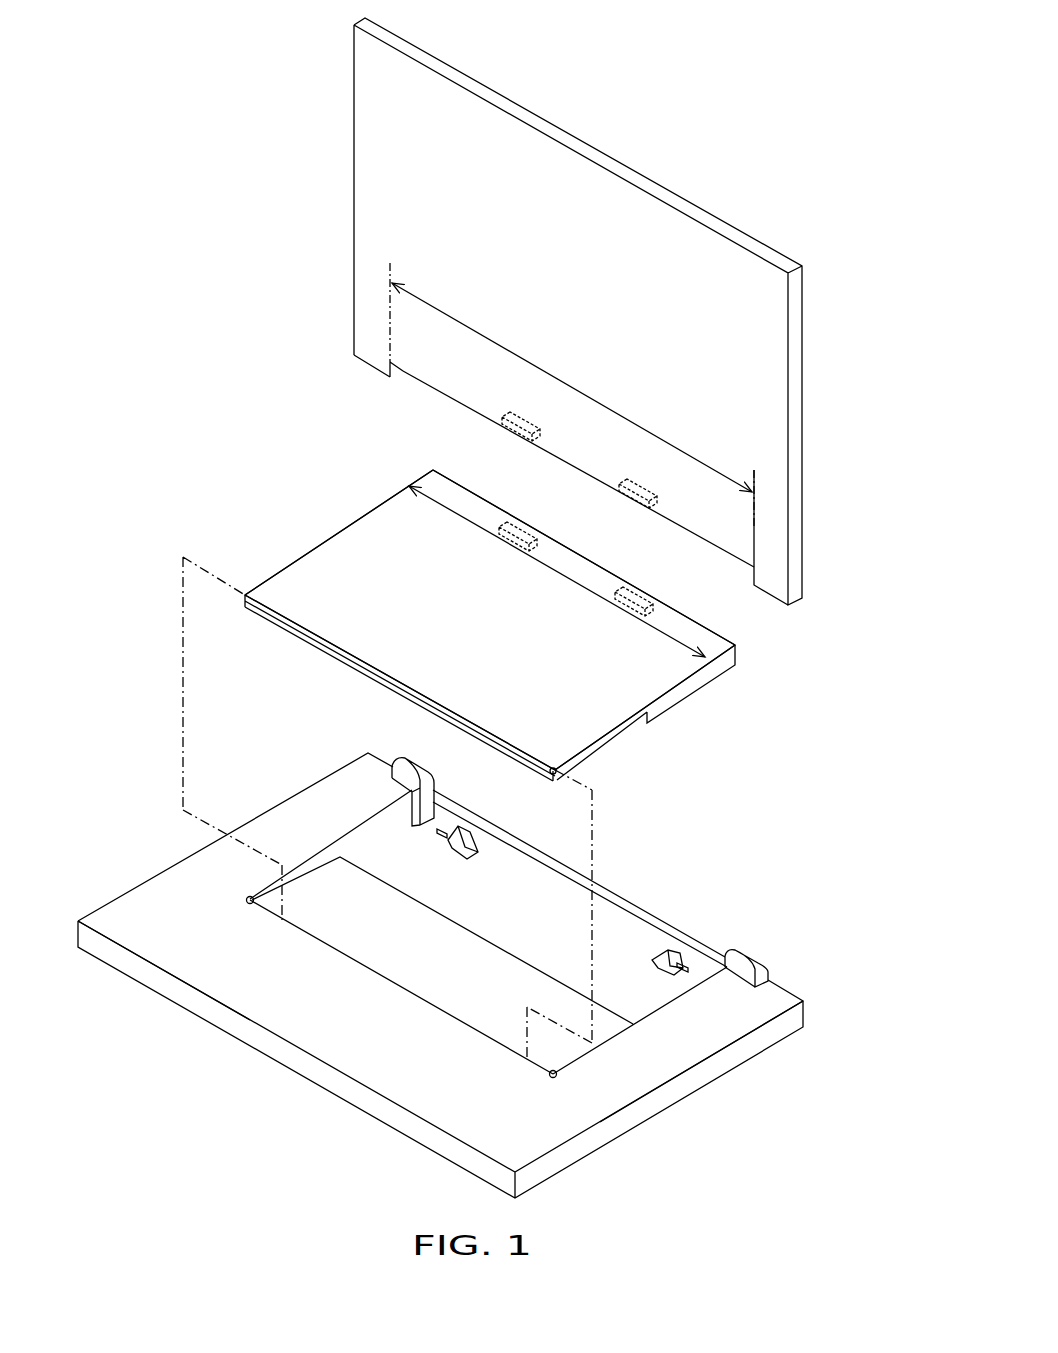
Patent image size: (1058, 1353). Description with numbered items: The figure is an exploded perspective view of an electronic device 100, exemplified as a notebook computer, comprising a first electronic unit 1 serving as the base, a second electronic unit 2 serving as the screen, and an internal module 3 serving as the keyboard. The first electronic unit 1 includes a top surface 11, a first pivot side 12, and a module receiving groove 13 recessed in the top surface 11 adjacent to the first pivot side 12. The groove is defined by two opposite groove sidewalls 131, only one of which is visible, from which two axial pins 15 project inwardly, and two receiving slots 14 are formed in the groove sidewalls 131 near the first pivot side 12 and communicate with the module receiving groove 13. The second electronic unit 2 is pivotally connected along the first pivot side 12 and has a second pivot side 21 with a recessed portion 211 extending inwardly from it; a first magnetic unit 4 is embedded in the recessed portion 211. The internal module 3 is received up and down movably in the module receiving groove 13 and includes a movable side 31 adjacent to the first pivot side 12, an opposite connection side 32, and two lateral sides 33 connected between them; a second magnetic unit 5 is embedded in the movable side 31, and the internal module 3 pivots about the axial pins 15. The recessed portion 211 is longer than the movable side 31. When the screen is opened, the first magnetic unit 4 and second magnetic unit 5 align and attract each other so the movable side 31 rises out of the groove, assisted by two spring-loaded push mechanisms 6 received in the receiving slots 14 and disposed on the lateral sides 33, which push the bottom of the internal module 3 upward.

The electronic device 100 is at (200, 209).
The first electronic unit 1 is at (237, 1037).
The top surface 11 is at (158, 910).
The first pivot side 12 is at (803, 1013).
The module receiving groove 13 is at (635, 995).
The groove sidewalls 131 is at (360, 847).
The receiving slots 14 is at (407, 802).
The axial pins 15 is at (247, 898).
The second electronic unit 2 is at (601, 140).
The second pivot side 21 is at (368, 366).
The recessed portion 211 is at (438, 391).
The internal module 3 is at (351, 521).
The movable side 31 is at (484, 498).
The connection side 32 is at (338, 652).
The lateral sides 33 is at (320, 543).
The first magnetic unit 4 is at (668, 500).
The second magnetic unit 5 is at (647, 591).
The spring-loaded push mechanisms 6 is at (469, 840).